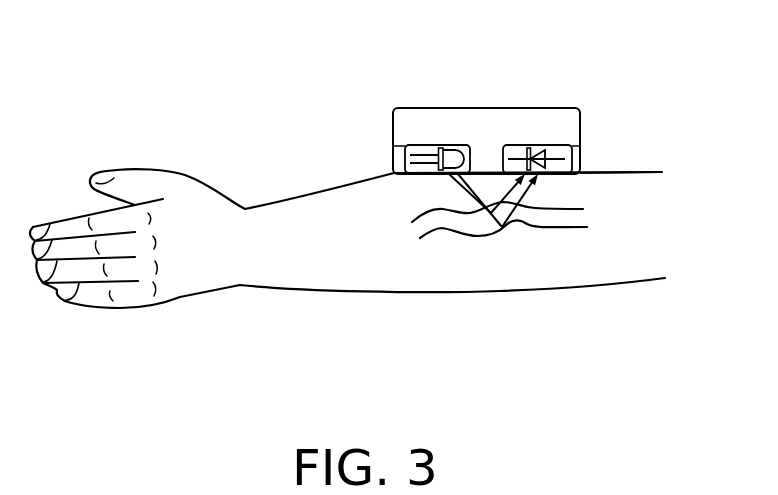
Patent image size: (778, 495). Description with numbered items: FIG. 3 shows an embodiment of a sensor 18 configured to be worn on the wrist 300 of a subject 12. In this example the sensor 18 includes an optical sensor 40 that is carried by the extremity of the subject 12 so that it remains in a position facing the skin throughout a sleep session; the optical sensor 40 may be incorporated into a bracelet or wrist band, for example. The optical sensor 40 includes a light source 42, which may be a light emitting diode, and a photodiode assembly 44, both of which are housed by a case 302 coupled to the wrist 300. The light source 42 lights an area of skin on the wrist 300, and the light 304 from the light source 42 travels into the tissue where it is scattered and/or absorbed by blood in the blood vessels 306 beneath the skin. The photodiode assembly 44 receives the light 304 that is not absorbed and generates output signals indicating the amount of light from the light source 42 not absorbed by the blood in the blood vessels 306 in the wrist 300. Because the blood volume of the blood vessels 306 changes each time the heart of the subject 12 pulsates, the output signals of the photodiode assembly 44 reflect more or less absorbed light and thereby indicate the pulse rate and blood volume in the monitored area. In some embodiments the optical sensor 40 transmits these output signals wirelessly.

The subject 12 is at (118, 135).
The sensor 18 is at (472, 99).
The optical sensor 40 is at (596, 186).
The light source 42 is at (393, 143).
The photodiode assembly 44 is at (580, 147).
The wrist 300 is at (337, 338).
The case 302 is at (486, 108).
The light 304 is at (526, 215).
The blood vessels 306 is at (476, 236).